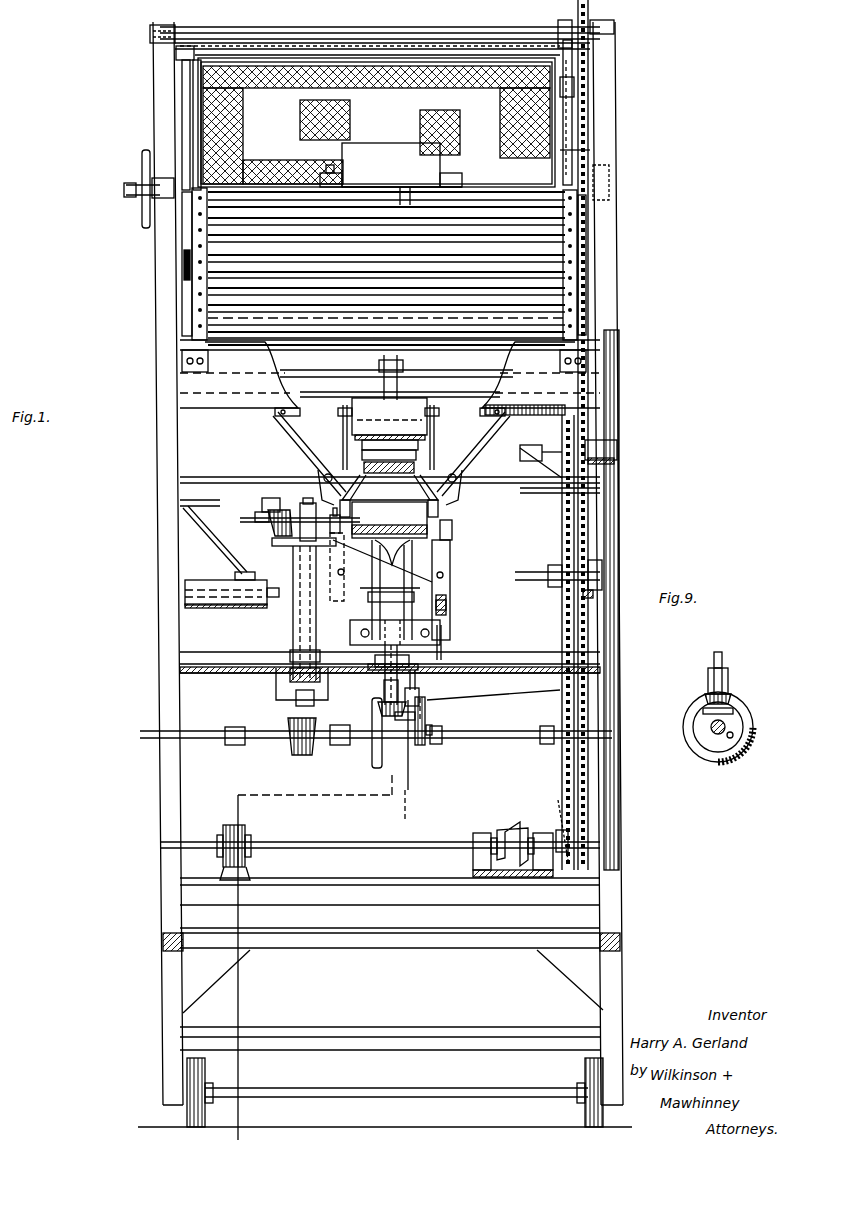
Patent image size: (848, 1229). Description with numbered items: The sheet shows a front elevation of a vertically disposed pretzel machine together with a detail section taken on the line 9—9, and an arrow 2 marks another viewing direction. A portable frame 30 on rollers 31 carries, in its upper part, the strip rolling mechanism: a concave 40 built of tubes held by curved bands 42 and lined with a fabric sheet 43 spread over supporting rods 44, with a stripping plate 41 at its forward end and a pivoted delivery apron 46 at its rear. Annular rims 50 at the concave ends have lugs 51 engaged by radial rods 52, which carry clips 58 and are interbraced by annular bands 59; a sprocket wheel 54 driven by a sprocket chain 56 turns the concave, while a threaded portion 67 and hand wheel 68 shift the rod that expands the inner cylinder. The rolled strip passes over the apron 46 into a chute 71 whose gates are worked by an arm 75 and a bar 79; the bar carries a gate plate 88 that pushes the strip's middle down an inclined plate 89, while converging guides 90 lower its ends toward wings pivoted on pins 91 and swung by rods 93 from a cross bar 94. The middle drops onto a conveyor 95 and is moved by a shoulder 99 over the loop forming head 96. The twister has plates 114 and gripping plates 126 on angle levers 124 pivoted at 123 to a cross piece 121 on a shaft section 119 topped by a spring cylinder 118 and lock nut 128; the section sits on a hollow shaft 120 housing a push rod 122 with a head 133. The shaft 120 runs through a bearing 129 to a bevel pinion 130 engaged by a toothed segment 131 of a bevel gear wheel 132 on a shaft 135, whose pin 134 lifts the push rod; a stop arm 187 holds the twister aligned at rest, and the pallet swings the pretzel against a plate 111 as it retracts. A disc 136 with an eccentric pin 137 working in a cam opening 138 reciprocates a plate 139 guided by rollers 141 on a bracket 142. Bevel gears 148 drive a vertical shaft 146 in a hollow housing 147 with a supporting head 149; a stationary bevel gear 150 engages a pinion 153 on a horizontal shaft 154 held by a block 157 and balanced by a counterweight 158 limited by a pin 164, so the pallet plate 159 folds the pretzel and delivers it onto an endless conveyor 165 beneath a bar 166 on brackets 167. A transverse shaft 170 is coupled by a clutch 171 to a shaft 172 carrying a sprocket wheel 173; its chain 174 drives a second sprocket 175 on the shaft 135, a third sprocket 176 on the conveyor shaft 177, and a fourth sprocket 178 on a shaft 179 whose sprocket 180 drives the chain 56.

In FIG. 1, the section line 2 is at (215, 1150).
In FIG. 1, the section line 9— 9 is at (425, 700).
In FIG. 1, the frame 30 is at (158, 110).
In FIG. 1, the wheels or rollers 31 is at (185, 1082).
In FIG. 1, the concave 40 is at (358, 188).
In FIG. 1, the stripping plate 41 is at (410, 143).
In FIG. 1, the curved bands 42 is at (205, 255).
In FIG. 1, the fabric sheet 43 is at (455, 62).
In FIG. 1, the rods 44 is at (405, 210).
In FIG. 1, the pivoted delivery apron 46 is at (498, 45).
In FIG. 1, the annular rims 50 is at (200, 310).
In FIG. 1, the lugs 51 is at (172, 60).
In FIG. 1, the radial rods 52 is at (185, 82).
In FIG. 1, the sprocket wheel 54 is at (578, 150).
In FIG. 1, the sprocket chain 56 is at (590, 128).
In FIG. 1, the clips 58 is at (575, 88).
In FIG. 1, the annular bands 59 is at (180, 135).
In FIG. 1, the threaded portion 67 is at (133, 190).
In FIG. 1, the hand wheel 68 is at (145, 222).
In FIG. 1, the delivery chute 71 is at (196, 380).
In FIG. 1, the arm 75 is at (392, 358).
In FIG. 1, the bar 79 is at (391, 357).
In FIG. 1, the gate plate 88 is at (405, 400).
In FIG. 1, the inclined plate 89 is at (400, 435).
In FIG. 1, the converging guides 90 is at (462, 455).
In FIG. 1, the supporting rods or pins 91 is at (325, 480).
In FIG. 1, the upwardly extending rods 93 is at (432, 420).
In FIG. 1, the cross bar 94 is at (352, 408).
In FIG. 1, the conveyor 95 is at (384, 460).
In FIG. 1, the loop forming head 96 is at (442, 496).
In FIG. 1, the upturned shoulder 99 is at (370, 455).
In FIG. 1, the plate 111 is at (432, 513).
In FIG. 1, the plates 114 is at (432, 560).
In FIG. 1, the cylinder 118 is at (436, 590).
In FIG. 1, the tubular shaft section 119 is at (375, 594).
In FIG. 1, the hollow shaft 120 is at (385, 642).
In FIG. 9, the hollow shaft 120 is at (728, 670).
In FIG. 1, the cross piece 121 is at (452, 615).
In FIG. 9, the push rod 122 is at (722, 652).
In FIG. 1, the pivots 123 is at (445, 585).
In FIG. 1, the angle levers 124 is at (445, 570).
In FIG. 1, the gripping plates 126 is at (448, 535).
In FIG. 1, the lock nut 128 is at (446, 605).
In FIG. 1, the bearing 129 is at (384, 702).
In FIG. 1, the bevel pinion 130 is at (380, 710).
In FIG. 9, the bevel pinion 130 is at (730, 692).
In FIG. 9, the toothed segment 131 is at (735, 752).
In FIG. 1, the bevel gear wheel 132 is at (380, 760).
In FIG. 9, the bevel gear wheel 132 is at (698, 748).
In FIG. 1, the head 133 is at (468, 698).
In FIG. 9, the head 133 is at (735, 708).
In FIG. 9, the pin 134 is at (733, 735).
In FIG. 1, the shaft 135 is at (240, 738).
In FIG. 9, the shaft 135 is at (716, 735).
In FIG. 1, the disc 136 is at (432, 715).
In FIG. 1, the eccentric pin 137 is at (430, 748).
In FIG. 1, the cam opening 138 is at (466, 722).
In FIG. 1, the reciprocating plate 139 is at (414, 756).
In FIG. 1, the guide rollers 141 is at (460, 680).
In FIG. 1, the bracket 142 is at (420, 668).
In FIG. 1, the vertical shaft 146 is at (300, 632).
In FIG. 1, the hollow housing 147 is at (297, 625).
In FIG. 1, the bevel gears 148 is at (310, 740).
In FIG. 1, the supporting head 149 is at (280, 545).
In FIG. 1, the bevel gear 150 is at (270, 530).
In FIG. 1, the bevel pinion 153 is at (276, 500).
In FIG. 1, the horizontal shaft 154 is at (262, 516).
In FIG. 1, the block 157 is at (302, 510).
In FIG. 1, the counterweight 158 is at (336, 518).
In FIG. 1, the pallet plate 159 is at (448, 530).
In FIG. 1, the pin 164 is at (342, 575).
In FIG. 1, the endless conveyor 165 is at (196, 590).
In FIG. 1, the bar 166 is at (242, 576).
In FIG. 1, the brackets 167 is at (195, 534).
In FIG. 1, the transverse shaft 170 is at (362, 848).
In FIG. 1, the clutch 171 is at (518, 828).
In FIG. 1, the shaft 172 is at (588, 838).
In FIG. 1, the sprocket wheel 173 is at (566, 825).
In FIG. 1, the chain 174 is at (566, 800).
In FIG. 1, the second sprocket 175 is at (566, 780).
In FIG. 1, the third sprocket wheel 176 is at (572, 572).
In FIG. 1, the conveyor shaft 177 is at (578, 580).
In FIG. 1, the fourth sprocket 178 is at (560, 470).
In FIG. 1, the shaft 179 is at (541, 451).
In FIG. 1, the sprocket wheel 180 is at (605, 450).
In FIG. 1, the stop arm 187 is at (458, 640).